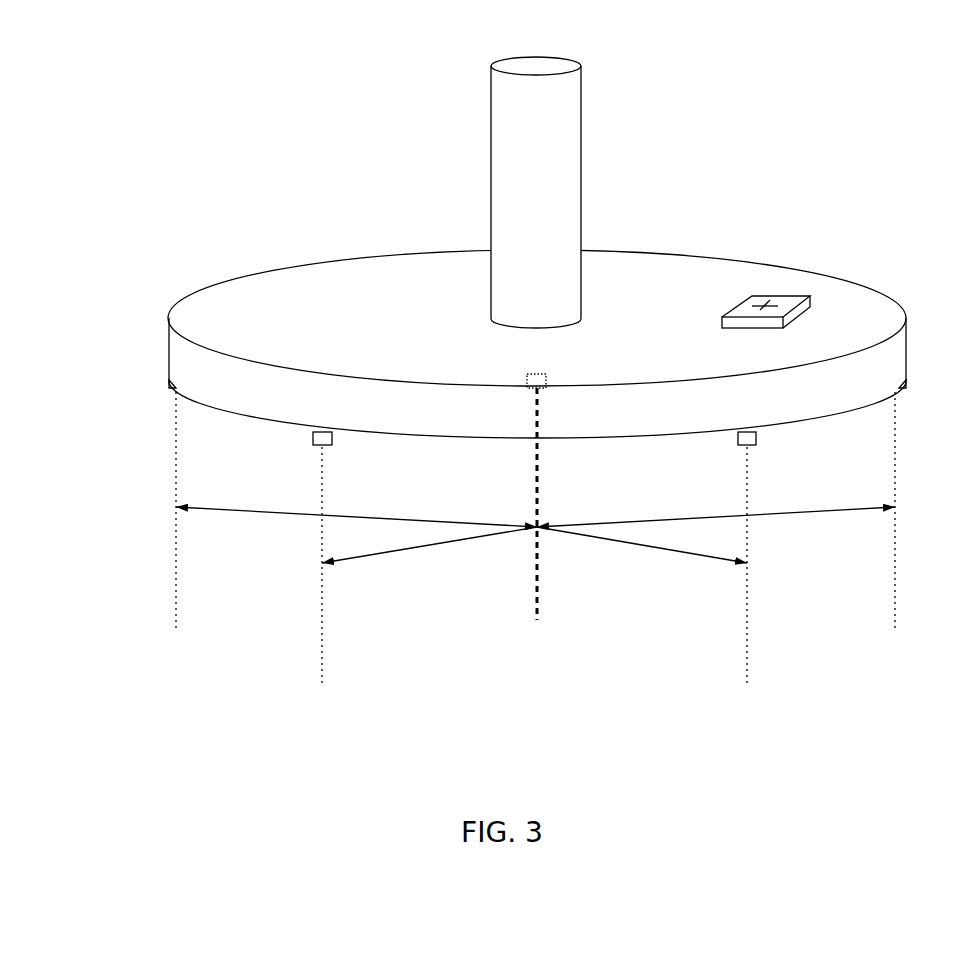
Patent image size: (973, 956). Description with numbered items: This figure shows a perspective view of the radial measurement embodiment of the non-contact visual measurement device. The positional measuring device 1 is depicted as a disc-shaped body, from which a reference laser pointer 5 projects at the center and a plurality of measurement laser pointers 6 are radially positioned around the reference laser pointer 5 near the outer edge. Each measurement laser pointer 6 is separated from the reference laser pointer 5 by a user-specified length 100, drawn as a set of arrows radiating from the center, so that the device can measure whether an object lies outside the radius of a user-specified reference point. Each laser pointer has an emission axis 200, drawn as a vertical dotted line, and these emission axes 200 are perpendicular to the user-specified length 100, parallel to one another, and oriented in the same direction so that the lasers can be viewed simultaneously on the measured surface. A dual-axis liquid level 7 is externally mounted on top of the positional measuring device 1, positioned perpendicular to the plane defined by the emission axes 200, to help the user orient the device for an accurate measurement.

The positional measuring device 1 is at (240, 170).
The reference laser pointer 5 is at (531, 389).
The measurement laser pointer 6 is at (170, 387).
The dual-axis liquid level 7 is at (735, 304).
The user-specified length 100 is at (266, 512).
The emission axis 200 is at (178, 612).